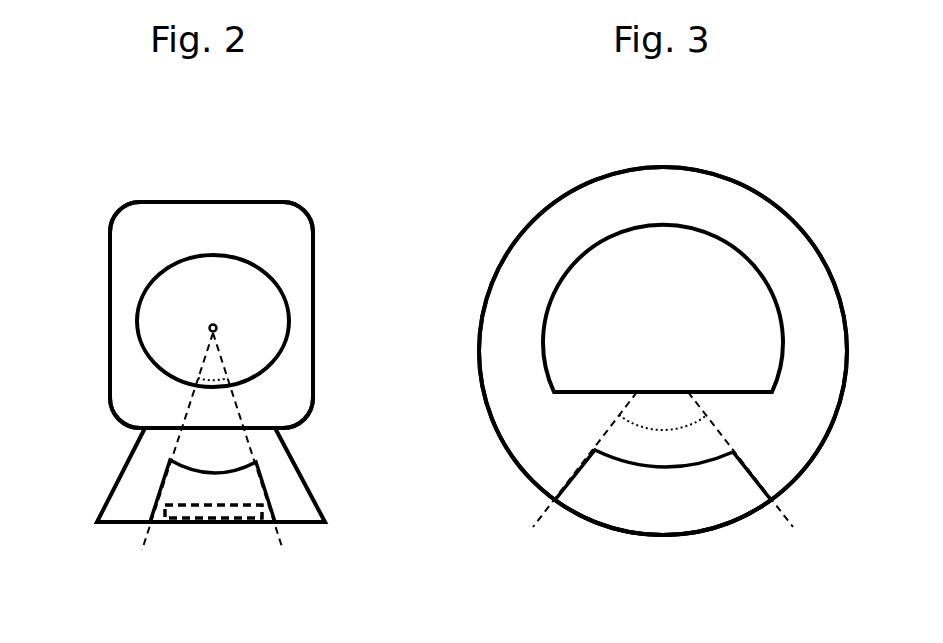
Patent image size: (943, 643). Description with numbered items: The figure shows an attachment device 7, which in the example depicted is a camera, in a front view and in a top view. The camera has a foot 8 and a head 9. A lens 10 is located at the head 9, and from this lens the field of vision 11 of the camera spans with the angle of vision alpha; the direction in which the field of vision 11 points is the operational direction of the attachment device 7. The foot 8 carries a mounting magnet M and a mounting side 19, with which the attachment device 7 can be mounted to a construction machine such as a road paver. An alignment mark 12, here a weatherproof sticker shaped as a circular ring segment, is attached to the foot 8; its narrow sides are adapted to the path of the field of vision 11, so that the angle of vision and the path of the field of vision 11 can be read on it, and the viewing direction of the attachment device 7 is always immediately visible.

In FIG. 2, the attachment device 7 is at (322, 168).
In FIG. 3, the attachment device 7 is at (800, 163).
In FIG. 2, the foot 8 is at (143, 498).
In FIG. 3, the foot 8 is at (632, 198).
In FIG. 2, the head 9 is at (126, 260).
In FIG. 3, the head 9 is at (608, 300).
In FIG. 2, the lens 10 is at (178, 340).
In FIG. 2, the field of vision 11 is at (210, 407).
In FIG. 3, the field of vision 11 is at (615, 436).
In FIG. 2, the alignment mark 12 is at (175, 487).
In FIG. 3, the alignment mark 12 is at (603, 502).
In FIG. 2, the mounting side 19 is at (312, 540).
In FIG. 2, the mounting magnet M is at (218, 510).